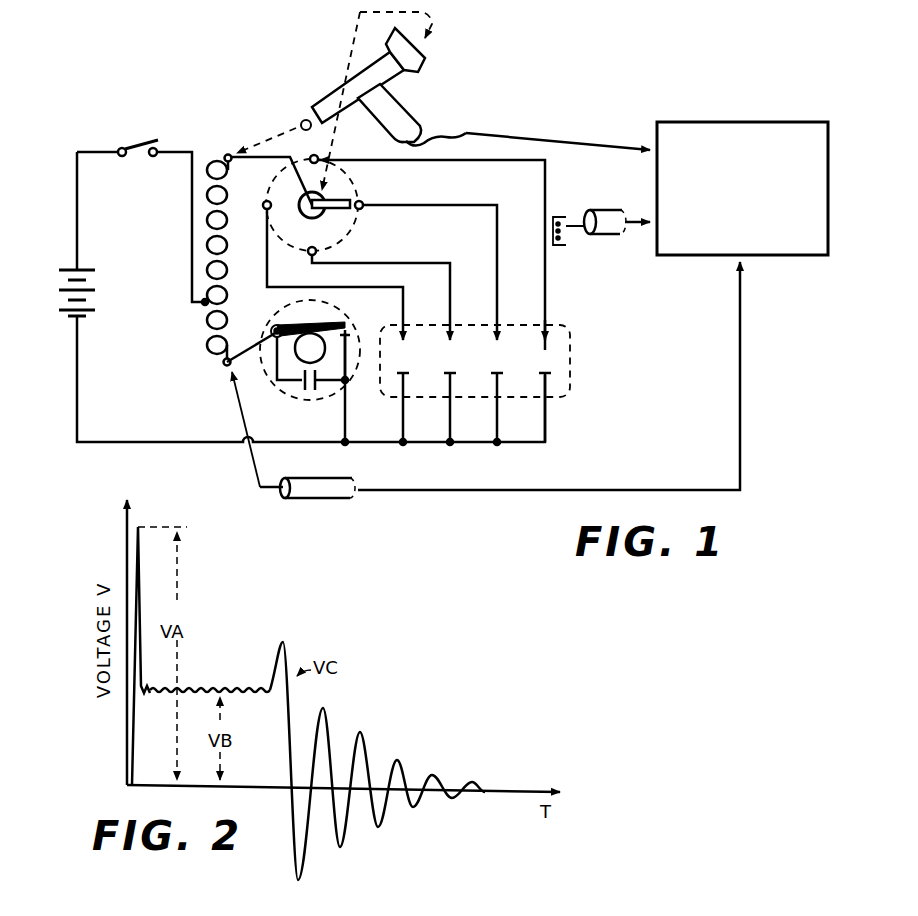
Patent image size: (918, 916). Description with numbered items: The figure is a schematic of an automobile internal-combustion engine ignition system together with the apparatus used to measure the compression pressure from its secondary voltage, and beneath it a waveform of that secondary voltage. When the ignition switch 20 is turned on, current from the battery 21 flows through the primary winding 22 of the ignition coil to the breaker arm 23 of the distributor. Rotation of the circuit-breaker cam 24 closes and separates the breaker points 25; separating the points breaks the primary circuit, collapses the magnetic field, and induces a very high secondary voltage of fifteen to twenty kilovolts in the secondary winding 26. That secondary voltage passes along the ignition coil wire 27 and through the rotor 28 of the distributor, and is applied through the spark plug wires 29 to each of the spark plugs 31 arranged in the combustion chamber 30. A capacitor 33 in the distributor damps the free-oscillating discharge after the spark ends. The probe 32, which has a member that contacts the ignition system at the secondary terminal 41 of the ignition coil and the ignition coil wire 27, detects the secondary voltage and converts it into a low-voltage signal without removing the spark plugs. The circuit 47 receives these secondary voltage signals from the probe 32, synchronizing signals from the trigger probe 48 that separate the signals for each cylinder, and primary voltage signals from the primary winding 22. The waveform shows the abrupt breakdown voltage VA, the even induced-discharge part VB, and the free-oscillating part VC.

The ignition switch 20 is at (143, 142).
The battery 21 is at (96, 294).
The primary winding 22 is at (205, 337).
The breaker arm 23 is at (270, 325).
The circuit-breaker cam 24 is at (305, 356).
The breaker points 25 is at (349, 328).
The secondary winding 26 is at (227, 235).
The ignition coil wire 27 is at (261, 160).
The rotor 28 is at (338, 225).
The spark plug wires 29 is at (444, 212).
The combustion chamber 30 is at (562, 364).
The spark plugs 31 is at (546, 346).
The probe 32 is at (407, 108).
The capacitor 33 is at (320, 389).
The secondary terminal 41 is at (227, 152).
The circuit 47 is at (702, 115).
The trigger probe 48 is at (561, 212).